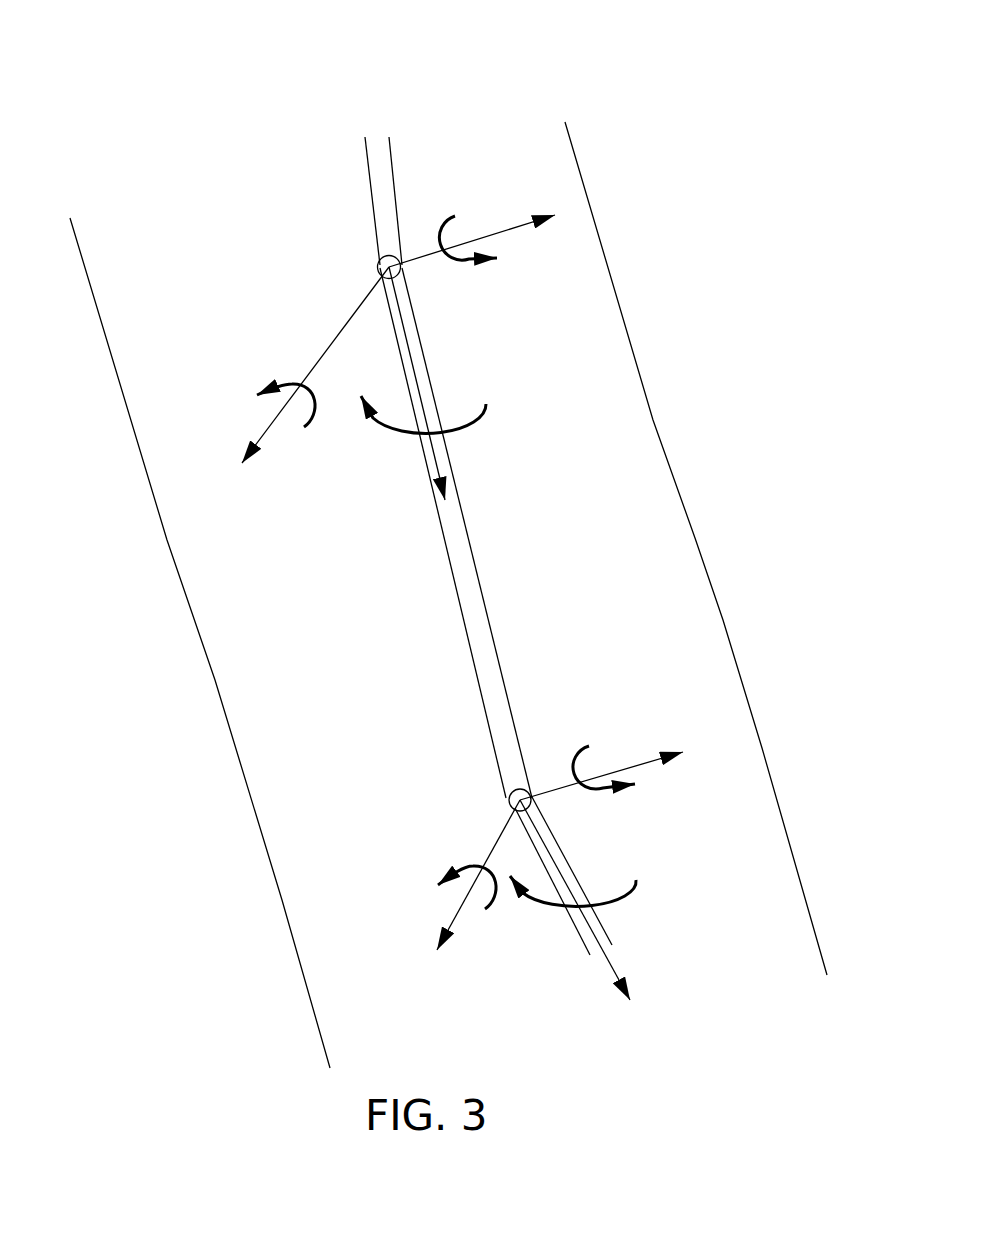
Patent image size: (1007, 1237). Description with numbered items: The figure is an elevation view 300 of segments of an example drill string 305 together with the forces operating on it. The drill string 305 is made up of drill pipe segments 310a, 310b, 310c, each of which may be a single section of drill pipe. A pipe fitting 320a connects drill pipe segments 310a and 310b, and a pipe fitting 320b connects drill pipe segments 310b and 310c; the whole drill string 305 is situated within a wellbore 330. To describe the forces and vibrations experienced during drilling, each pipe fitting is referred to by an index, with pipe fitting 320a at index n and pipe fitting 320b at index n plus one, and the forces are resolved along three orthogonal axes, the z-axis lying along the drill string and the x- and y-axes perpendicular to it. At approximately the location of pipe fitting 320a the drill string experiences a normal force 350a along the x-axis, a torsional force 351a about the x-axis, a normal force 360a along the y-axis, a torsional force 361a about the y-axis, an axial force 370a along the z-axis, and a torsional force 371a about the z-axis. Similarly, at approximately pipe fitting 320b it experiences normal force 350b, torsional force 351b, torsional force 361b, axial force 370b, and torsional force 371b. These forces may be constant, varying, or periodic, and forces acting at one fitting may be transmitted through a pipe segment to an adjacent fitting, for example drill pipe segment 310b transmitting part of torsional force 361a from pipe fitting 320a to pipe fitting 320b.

The force and moment diagram of elongated member 300 is at (224, 70).
The drill string 305 is at (499, 511).
The drill pipe segment 310a is at (409, 184).
The drill pipe segment 310b is at (482, 580).
The drill pipe segment 310c is at (570, 857).
The pipe fitting 320a is at (364, 263).
The pipe fitting 320b is at (491, 786).
The wellbore 330 is at (676, 472).
The normal force 350a is at (511, 231).
The normal force 350b is at (630, 764).
The torsional force 351a is at (470, 264).
The torsional force 351b is at (585, 750).
The normal force 360a is at (330, 343).
The torsional force 361a is at (305, 426).
The torsional force 361b is at (485, 909).
The axial force 370a is at (444, 463).
The axial force 370b is at (613, 980).
The torsional force 371a is at (484, 406).
The torsional force 371b is at (636, 880).